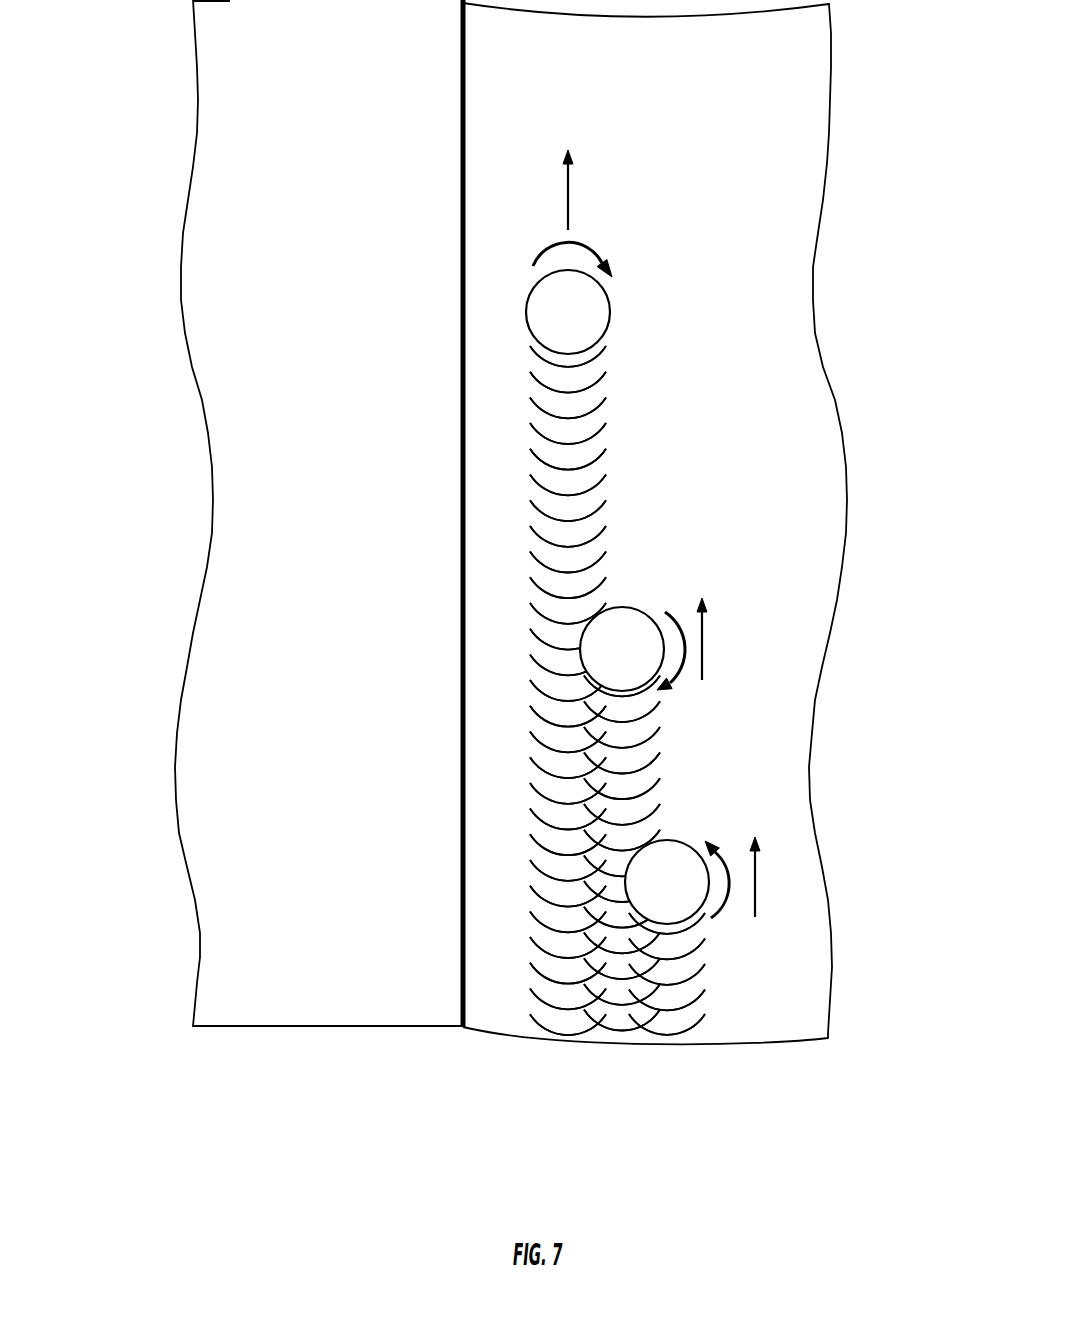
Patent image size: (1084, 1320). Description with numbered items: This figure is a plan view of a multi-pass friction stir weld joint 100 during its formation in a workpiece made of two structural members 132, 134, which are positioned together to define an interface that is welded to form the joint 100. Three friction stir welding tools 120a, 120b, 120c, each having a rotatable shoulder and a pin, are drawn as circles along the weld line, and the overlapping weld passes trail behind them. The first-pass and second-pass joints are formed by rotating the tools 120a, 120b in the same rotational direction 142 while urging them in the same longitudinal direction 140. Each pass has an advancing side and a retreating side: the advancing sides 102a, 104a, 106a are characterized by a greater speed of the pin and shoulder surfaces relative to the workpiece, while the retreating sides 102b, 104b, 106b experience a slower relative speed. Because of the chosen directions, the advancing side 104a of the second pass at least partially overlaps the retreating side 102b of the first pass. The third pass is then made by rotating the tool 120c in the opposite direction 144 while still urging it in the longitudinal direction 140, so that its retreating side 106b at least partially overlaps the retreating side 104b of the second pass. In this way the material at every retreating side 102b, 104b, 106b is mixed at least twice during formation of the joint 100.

The multi-pass friction stir weld joint 100 is at (623, 1050).
The advancing side of the first-pass joint 102a is at (505, 403).
The retreating side of the first-pass joint 102b is at (626, 384).
The advancing side of the second-pass joint 104a is at (568, 743).
The retreating side of the second-pass joint 104b is at (677, 735).
The advancing side of the third-pass joint 106a is at (620, 973).
The retreating side of the third-pass joint 106b is at (718, 976).
The friction stir welding tool 120a is at (527, 305).
The friction stir welding tool 120b is at (581, 643).
The friction stir welding tool 120c is at (625, 882).
The structural member 132 is at (827, 163).
The structural member 134 is at (196, 102).
The longitudinal direction 140 is at (568, 210).
The rotational direction 142 is at (533, 262).
The opposite rotational direction 144 is at (713, 920).